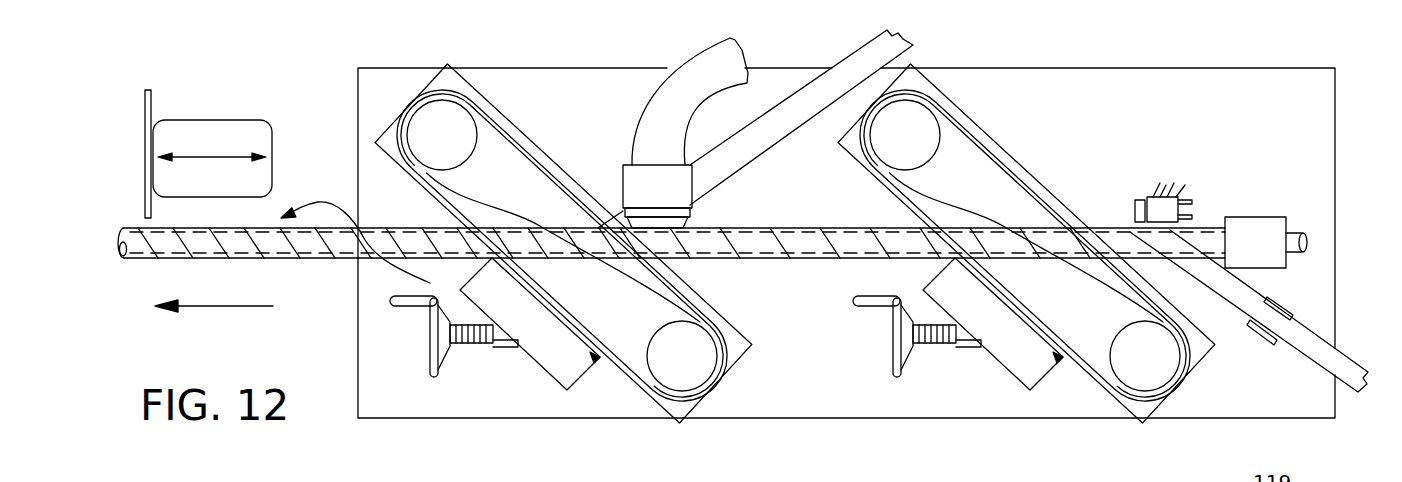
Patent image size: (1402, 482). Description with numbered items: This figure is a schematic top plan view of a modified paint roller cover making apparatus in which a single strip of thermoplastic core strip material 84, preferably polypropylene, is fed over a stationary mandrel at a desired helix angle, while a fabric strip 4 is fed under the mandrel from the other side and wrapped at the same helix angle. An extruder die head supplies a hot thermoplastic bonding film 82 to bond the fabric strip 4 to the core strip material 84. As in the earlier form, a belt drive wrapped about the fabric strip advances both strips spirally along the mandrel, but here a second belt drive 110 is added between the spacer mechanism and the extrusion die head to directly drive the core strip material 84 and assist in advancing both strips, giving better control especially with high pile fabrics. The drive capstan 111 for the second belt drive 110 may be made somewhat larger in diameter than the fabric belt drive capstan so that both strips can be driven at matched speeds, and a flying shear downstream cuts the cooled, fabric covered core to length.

The fabric strip 4 is at (850, 70).
The hot thermoplastic bonding film 82 is at (663, 226).
The core strip material 84 is at (1302, 348).
The second belt drive 110 is at (1034, 160).
The drive capstan 111 is at (910, 118).